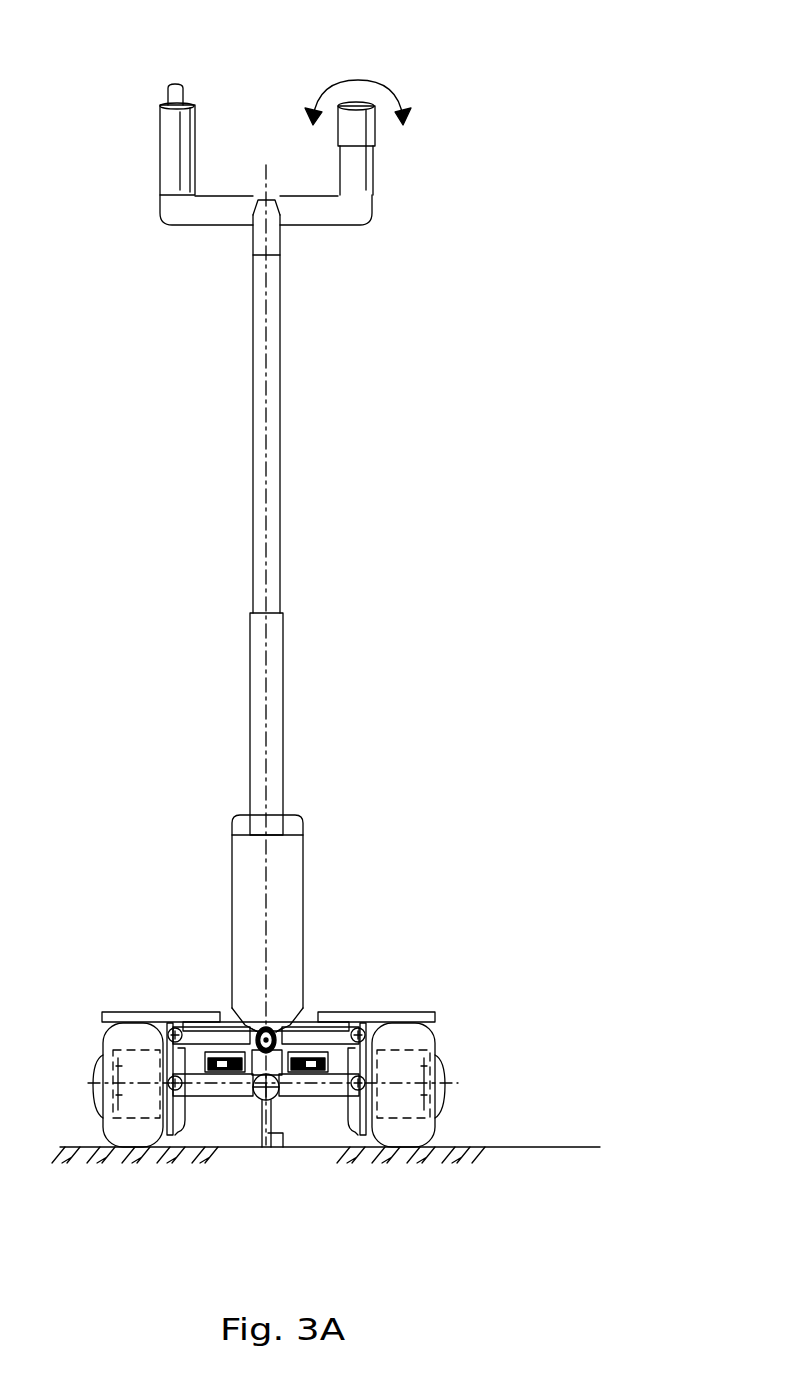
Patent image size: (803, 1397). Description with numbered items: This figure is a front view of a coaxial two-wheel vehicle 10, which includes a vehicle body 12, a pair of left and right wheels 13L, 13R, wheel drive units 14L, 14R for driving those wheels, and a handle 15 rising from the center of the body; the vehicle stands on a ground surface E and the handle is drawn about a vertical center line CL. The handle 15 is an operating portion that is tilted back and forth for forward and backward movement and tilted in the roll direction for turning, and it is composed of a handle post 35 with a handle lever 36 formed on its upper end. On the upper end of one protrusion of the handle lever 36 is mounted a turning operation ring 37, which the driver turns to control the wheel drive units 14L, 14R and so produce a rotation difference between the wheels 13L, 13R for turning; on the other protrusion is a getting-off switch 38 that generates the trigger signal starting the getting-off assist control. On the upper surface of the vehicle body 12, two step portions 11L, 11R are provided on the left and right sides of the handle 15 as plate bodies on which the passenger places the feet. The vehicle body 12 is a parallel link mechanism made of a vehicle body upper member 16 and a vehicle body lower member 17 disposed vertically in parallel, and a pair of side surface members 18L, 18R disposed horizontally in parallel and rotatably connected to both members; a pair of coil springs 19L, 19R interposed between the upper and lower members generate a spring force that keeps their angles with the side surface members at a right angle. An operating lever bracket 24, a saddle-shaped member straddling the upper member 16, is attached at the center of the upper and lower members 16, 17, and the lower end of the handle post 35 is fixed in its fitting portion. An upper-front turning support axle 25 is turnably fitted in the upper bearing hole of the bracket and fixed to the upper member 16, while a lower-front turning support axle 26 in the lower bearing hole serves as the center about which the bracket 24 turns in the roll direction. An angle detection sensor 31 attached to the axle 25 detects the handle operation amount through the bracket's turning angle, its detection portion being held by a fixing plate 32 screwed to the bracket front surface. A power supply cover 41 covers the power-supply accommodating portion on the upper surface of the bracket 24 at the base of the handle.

The coaxial two-wheel vehicle 10 is at (148, 563).
The step portion 11R is at (133, 1013).
The step portion 11L is at (402, 1013).
The vehicle body 12 is at (230, 1125).
The wheel 13R is at (115, 1036).
The wheel 13L is at (425, 1040).
The wheel drive unit 14R is at (108, 1058).
The wheel drive unit 14L is at (440, 1058).
The handle 15 is at (200, 76).
The vehicle body upper member 16 is at (340, 1013).
The vehicle body lower member 17 is at (318, 1097).
The side surface member 18R is at (178, 1137).
The side surface member 18L is at (352, 1137).
The coil spring 19R is at (215, 1075).
The coil spring 19L is at (297, 1075).
The operating lever bracket 24 is at (258, 1032).
The upper-front turning support axle 25 is at (274, 1042).
The lower-front turning support axle 26 is at (258, 1102).
The angle detection sensor 31 is at (278, 1035).
The fixing plate 32 is at (260, 1040).
The handle post 35 is at (283, 712).
The handle lever 36 is at (330, 218).
The turning operation ring 37 is at (377, 133).
The getting-off switch 38 is at (163, 97).
The power supply cover 41 is at (240, 855).
The center line CL is at (265, 375).
The ground surface E is at (578, 1147).